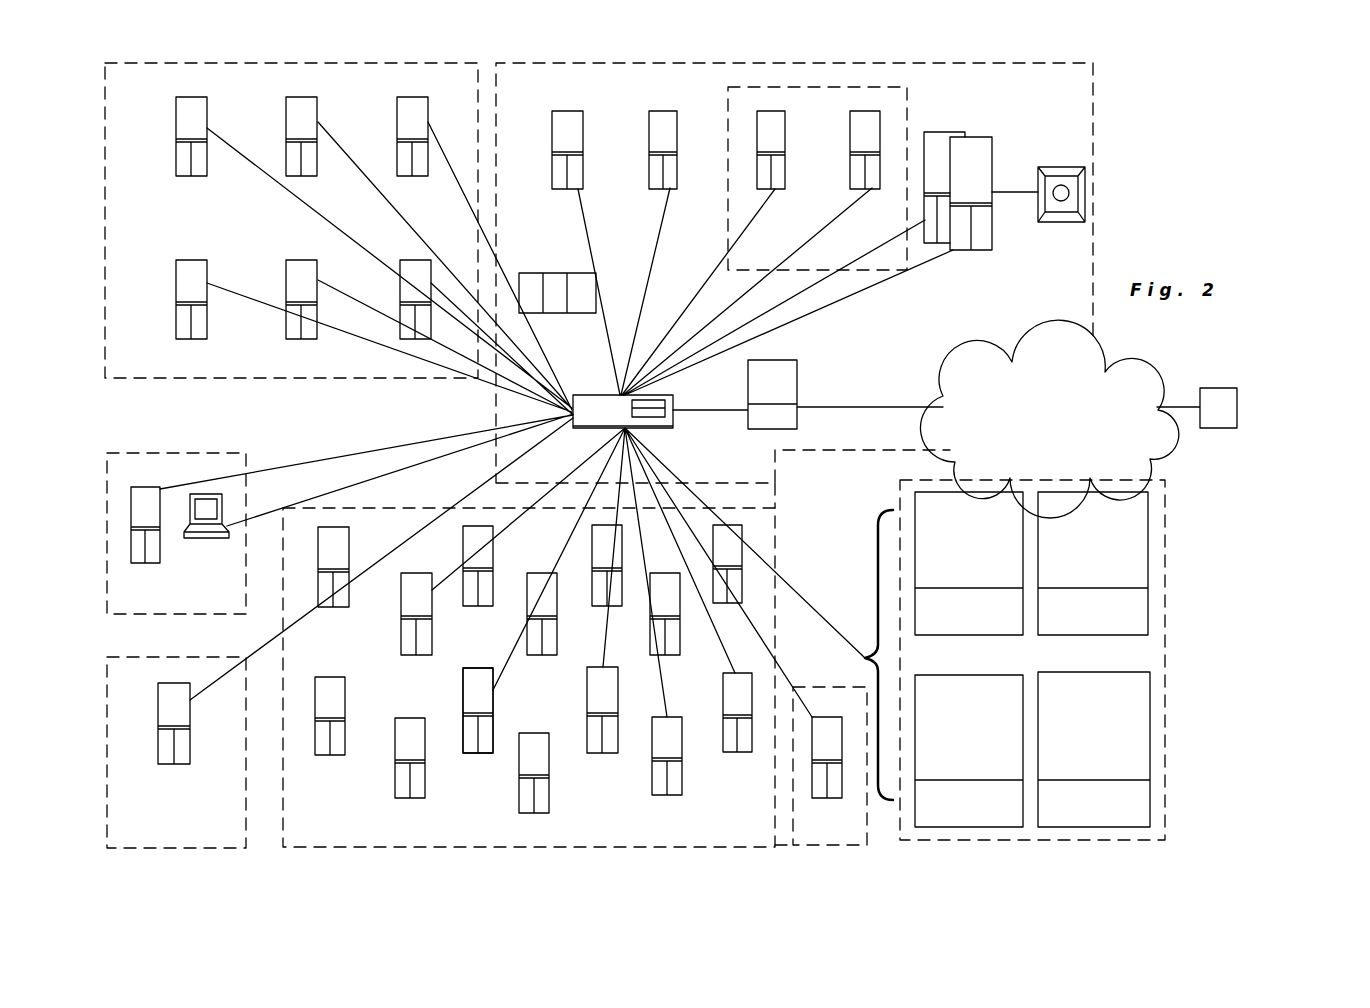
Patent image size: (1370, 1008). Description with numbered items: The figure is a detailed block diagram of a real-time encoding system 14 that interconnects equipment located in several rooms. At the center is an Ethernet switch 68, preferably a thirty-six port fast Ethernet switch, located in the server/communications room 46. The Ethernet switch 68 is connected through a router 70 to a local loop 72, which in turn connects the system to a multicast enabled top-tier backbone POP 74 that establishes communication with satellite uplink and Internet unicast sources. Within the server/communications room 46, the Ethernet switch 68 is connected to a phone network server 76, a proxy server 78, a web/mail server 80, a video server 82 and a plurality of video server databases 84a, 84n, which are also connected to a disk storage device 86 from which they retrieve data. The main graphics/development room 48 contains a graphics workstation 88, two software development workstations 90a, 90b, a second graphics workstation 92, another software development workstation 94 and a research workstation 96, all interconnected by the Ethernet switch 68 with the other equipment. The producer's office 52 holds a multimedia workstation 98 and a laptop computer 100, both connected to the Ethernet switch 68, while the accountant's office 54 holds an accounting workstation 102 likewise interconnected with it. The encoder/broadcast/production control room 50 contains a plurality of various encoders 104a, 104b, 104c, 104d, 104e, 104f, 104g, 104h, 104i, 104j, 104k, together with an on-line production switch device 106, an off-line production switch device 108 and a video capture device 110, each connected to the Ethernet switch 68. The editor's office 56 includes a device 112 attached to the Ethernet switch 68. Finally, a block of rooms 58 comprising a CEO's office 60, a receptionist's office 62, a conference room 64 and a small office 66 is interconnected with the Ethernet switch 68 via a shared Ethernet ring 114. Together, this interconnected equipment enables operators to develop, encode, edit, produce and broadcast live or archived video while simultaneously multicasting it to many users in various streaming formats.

The real-time encoding system 14 is at (1133, 87).
The server/communications room 46 is at (1093, 90).
The main graphics/development room 48 is at (440, 379).
The encoder/broadcast/production control room 50 is at (407, 847).
The producer's office 52 is at (220, 450).
The accountant's office 54 is at (147, 657).
The editor's office 56 is at (838, 847).
The block of rooms 58 is at (1165, 690).
The CEO's office 60 is at (987, 545).
The receptionist's office 62 is at (1115, 545).
The conference room 64 is at (1115, 730).
The small office 66 is at (990, 730).
The Ethernet switch 68 is at (657, 430).
The router 70 is at (798, 377).
The DS-3 local loop 72 is at (1150, 438).
The multicast enabled Tier 1 backbone POP 74 is at (1208, 430).
The phone network server 76 is at (577, 111).
The proxy server 78 is at (649, 140).
The web/mail server 80 is at (785, 173).
The video server 82 is at (850, 122).
The video server database 84a is at (933, 132).
The video server database 84n is at (992, 160).
The disk storage device 86 is at (1085, 177).
The graphics workstation 88 is at (200, 177).
The software development workstation 90a is at (286, 130).
The software development workstation 90b is at (413, 176).
The graphics workstation 92 is at (200, 260).
The software development workstation 94 is at (300, 260).
The research workstation 96 is at (407, 260).
The multimedia workstation 98 is at (143, 487).
The laptop computer 100 is at (210, 539).
The accounting workstation 102 is at (192, 751).
The encoder 104a is at (375, 540).
The encoder 104b is at (401, 593).
The encoder 104c is at (475, 526).
The encoder 104d is at (337, 757).
The encoder 104e is at (395, 733).
The encoder 104f is at (467, 757).
The encoder 104g is at (549, 757).
The encoder 104h is at (592, 553).
The encoder 104i is at (578, 650).
The encoder 104j is at (680, 630).
The encoder 104k is at (742, 530).
The on-line production switch device 106 is at (683, 778).
The off-line production switch device 108 is at (588, 740).
The video capture device 110 is at (720, 708).
The editor's office equipment 112 is at (812, 795).
The shared Ethernet ring 114 is at (800, 749).